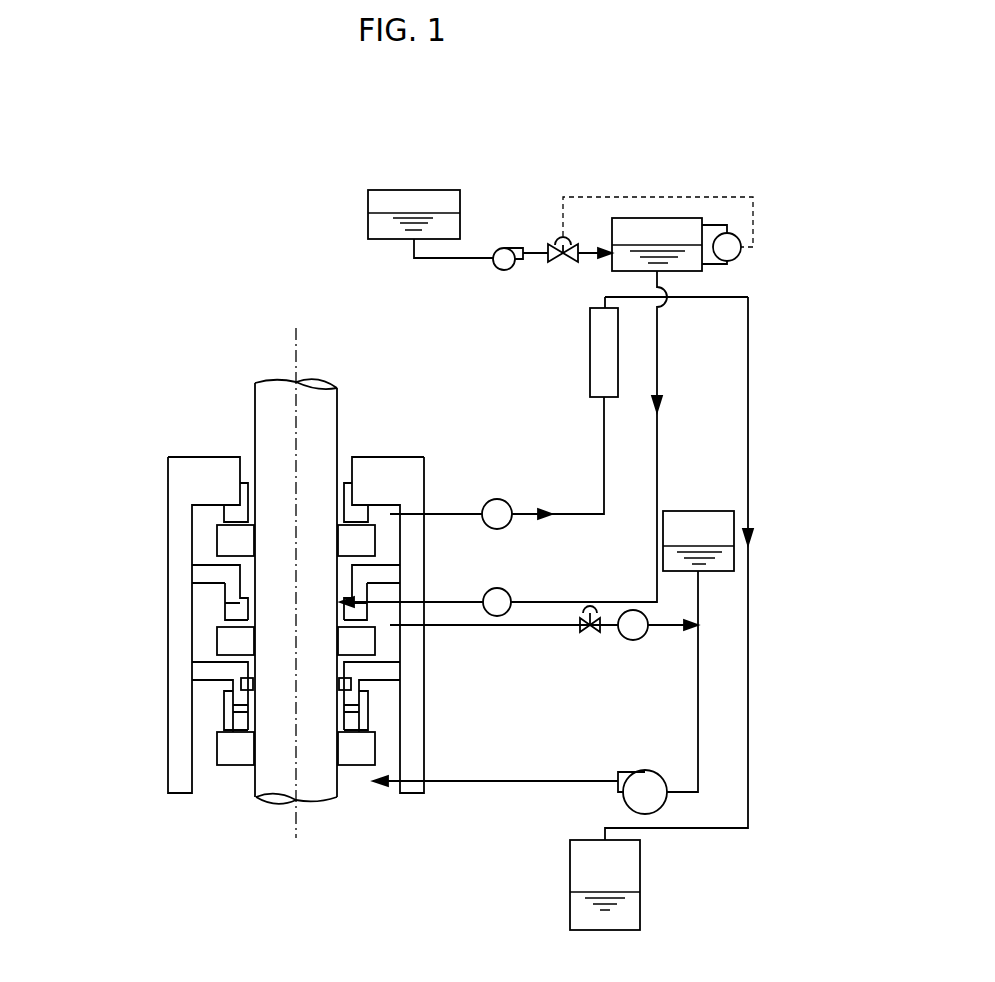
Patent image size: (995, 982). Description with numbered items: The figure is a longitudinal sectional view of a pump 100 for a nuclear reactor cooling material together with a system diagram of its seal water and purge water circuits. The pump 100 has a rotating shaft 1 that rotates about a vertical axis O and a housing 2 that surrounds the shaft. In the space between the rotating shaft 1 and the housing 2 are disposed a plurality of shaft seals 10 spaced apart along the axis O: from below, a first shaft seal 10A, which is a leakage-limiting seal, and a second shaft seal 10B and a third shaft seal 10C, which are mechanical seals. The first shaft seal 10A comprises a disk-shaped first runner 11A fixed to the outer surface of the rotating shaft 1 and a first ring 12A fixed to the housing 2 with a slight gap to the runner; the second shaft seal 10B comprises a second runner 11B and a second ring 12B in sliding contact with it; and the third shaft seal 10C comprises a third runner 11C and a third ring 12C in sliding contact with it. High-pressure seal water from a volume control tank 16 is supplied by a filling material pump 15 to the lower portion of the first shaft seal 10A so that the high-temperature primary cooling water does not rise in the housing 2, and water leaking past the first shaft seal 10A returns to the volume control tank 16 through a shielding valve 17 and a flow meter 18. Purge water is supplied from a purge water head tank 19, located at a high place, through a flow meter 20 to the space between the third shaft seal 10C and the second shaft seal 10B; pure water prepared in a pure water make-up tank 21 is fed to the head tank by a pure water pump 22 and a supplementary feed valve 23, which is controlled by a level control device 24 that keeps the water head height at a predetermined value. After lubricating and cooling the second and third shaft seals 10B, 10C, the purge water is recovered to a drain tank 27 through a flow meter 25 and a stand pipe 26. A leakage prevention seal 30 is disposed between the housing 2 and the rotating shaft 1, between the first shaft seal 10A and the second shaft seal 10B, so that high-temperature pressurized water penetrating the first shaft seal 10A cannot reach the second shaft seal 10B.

The pump for a nuclear reactor cooling material 100 is at (174, 260).
The rotating shaft 1 is at (268, 412).
The housing 2 is at (193, 468).
The axis O is at (300, 356).
The shaft seals 10 is at (52, 520).
The first shaft seal 10A is at (99, 715).
The second shaft seal 10B is at (99, 605).
The third shaft seal 10C is at (99, 512).
The first runner 11A is at (230, 754).
The second runner 11B is at (228, 644).
The third runner 11C is at (228, 547).
The first ring 12A is at (238, 722).
The second ring 12B is at (230, 611).
The third ring 12C is at (230, 513).
The filling material pump 15 is at (637, 778).
The volume control tank 16 is at (700, 527).
The shielding valve 17 is at (586, 632).
The flow meter 18 is at (636, 640).
The purge water head tank 19 is at (660, 228).
The flow meter 20 is at (508, 590).
The pure water make-up tank 21 is at (405, 190).
The pure water pump 22 is at (507, 271).
The supplementary feed valve 23 is at (560, 265).
The level control device 24 is at (740, 236).
The flow meter 25 is at (500, 499).
The stand pipe 26 is at (590, 350).
The drain tank 27 is at (632, 868).
The leakage prevention seal 30 is at (356, 683).